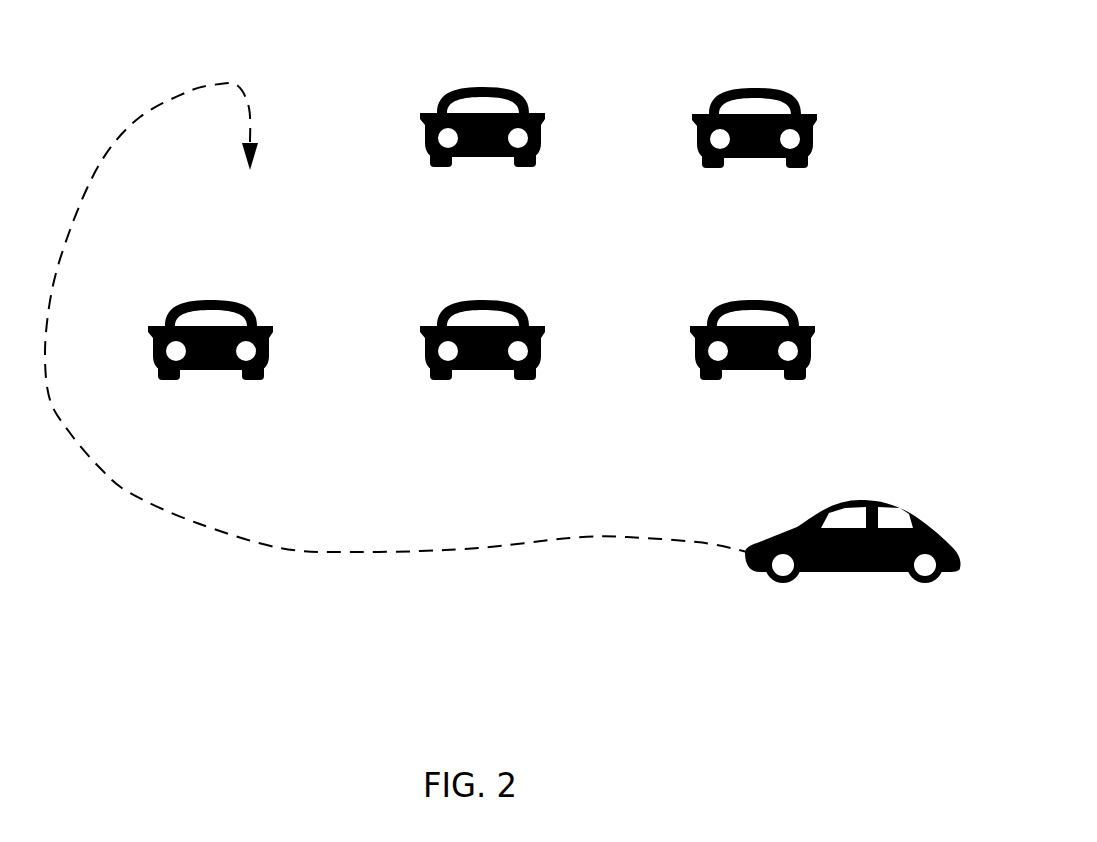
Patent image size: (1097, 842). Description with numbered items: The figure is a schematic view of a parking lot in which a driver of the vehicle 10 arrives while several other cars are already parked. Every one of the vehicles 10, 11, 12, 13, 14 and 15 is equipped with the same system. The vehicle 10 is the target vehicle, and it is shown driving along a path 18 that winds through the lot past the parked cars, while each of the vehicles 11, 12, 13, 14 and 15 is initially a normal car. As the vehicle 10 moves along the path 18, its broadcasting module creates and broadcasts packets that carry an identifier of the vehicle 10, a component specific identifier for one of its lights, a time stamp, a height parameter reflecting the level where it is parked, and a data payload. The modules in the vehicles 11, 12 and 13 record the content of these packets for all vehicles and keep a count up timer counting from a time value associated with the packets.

The vehicle 10 is at (888, 503).
The vehicle 11 is at (243, 308).
The vehicle 12 is at (515, 308).
The vehicle 13 is at (795, 308).
The vehicle 14 is at (507, 90).
The vehicle 15 is at (790, 93).
The path 18 is at (192, 90).